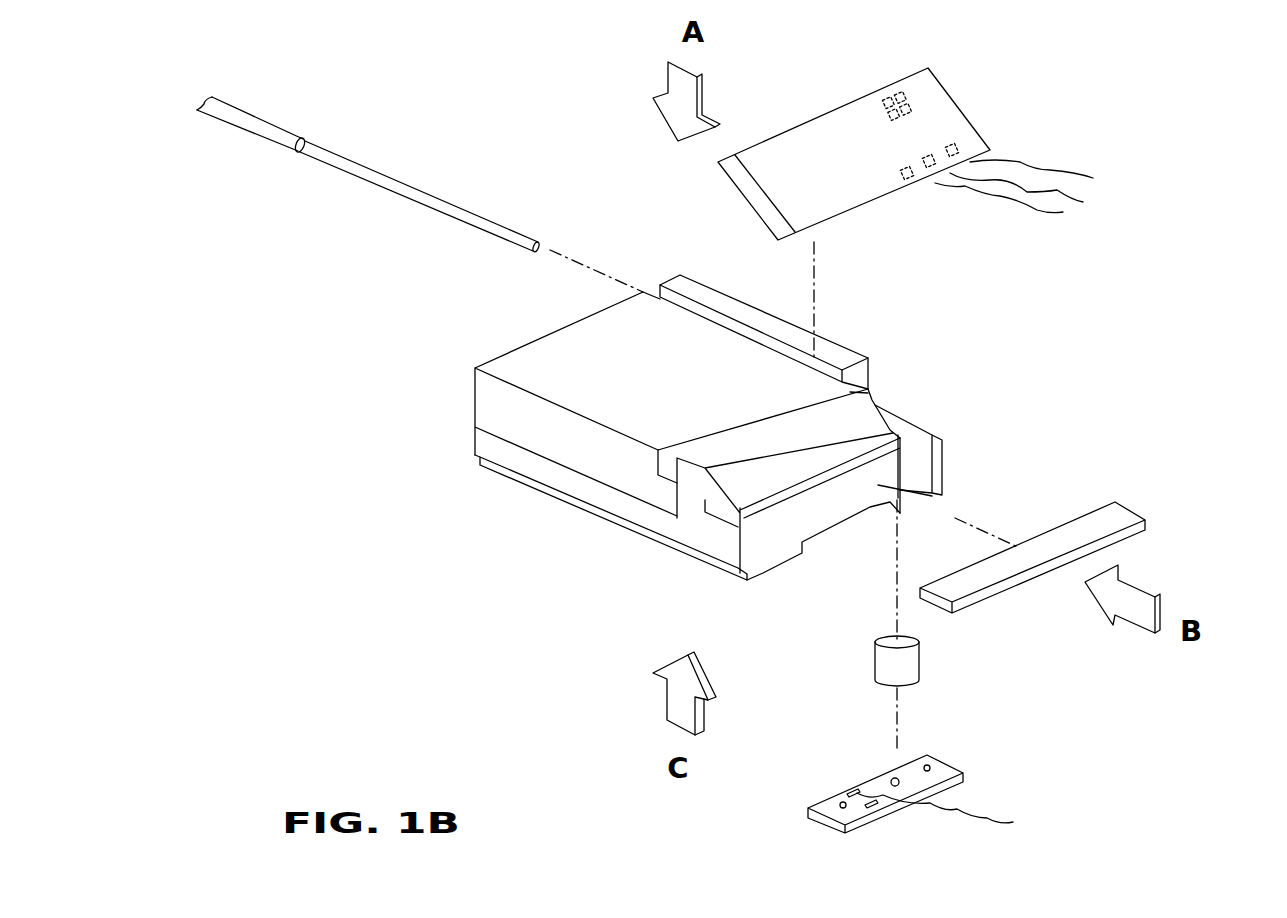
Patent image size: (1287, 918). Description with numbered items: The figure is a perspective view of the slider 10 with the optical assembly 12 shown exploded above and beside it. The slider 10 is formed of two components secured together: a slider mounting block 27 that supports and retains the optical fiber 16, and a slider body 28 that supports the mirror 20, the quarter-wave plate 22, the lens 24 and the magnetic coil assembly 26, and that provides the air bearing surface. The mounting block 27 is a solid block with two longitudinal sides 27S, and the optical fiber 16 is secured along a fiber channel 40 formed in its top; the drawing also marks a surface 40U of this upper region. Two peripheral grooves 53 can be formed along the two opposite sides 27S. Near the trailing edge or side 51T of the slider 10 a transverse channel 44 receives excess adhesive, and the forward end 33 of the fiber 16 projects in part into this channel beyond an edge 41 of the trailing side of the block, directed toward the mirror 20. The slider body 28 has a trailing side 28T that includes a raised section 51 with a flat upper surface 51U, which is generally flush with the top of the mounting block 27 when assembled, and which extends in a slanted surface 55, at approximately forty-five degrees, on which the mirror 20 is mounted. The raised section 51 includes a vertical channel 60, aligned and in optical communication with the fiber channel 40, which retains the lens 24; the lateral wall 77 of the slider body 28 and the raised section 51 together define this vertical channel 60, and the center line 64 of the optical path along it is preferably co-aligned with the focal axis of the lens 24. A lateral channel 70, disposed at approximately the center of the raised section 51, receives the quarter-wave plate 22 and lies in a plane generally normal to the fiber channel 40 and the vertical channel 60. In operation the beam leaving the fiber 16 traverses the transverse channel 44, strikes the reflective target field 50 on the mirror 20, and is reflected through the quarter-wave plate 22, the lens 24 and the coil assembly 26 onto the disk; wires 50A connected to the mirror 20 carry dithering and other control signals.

The slider 10 is at (462, 308).
The optical assembly 12 is at (787, 104).
The optical fiber 16 is at (273, 135).
The mirror 20 is at (933, 108).
The quarter-wave plate 22 is at (1122, 517).
The lens 24 is at (910, 677).
The magnetic coil assembly 26 is at (957, 763).
The slider mounting block 27 is at (474, 390).
The longitudinal sides 27S is at (708, 285).
The slider body 28 is at (547, 480).
The trailing side 28T is at (735, 583).
The forward end 33 is at (540, 248).
The fiber channel 40 is at (673, 302).
The upper surface of top cover 40U is at (627, 387).
The edge 41 is at (870, 366).
The transverse channel 44 is at (660, 457).
The reflective target field 50 is at (887, 98).
The wires 50A is at (1020, 160).
The raised section 51 is at (660, 507).
The flat upper surface 51U is at (870, 387).
The trailing edge or side 51T is at (874, 394).
The peripheral grooves 53 is at (558, 497).
The slanted surface 55 is at (805, 462).
The vertical channel 60 is at (902, 493).
The center line 64 is at (890, 568).
The lateral channel 70 is at (708, 530).
The lateral wall 77 is at (940, 463).